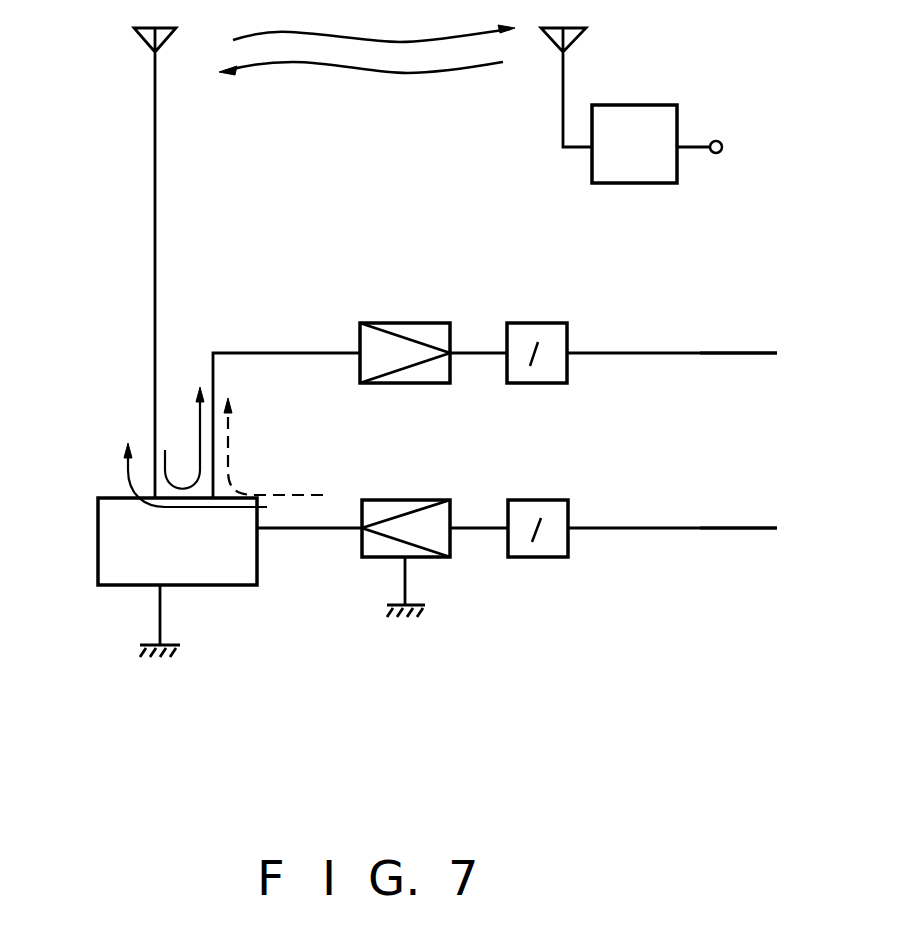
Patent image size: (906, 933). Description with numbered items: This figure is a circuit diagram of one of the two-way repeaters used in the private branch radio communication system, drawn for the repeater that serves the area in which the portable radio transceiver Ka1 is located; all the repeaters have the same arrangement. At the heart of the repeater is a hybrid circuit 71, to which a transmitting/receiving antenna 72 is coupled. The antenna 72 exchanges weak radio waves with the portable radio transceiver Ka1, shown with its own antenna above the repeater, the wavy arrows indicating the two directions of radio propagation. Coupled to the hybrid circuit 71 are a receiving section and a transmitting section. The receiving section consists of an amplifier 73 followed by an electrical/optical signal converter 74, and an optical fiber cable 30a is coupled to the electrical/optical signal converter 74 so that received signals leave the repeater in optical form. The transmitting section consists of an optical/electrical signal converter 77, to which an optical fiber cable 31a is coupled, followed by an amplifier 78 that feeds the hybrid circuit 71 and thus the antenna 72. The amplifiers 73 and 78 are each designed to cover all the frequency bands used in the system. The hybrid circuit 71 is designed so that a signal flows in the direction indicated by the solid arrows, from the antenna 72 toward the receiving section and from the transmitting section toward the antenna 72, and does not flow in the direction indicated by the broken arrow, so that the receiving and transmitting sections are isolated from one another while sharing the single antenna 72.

The hybrid circuit 71 is at (98, 550).
The transmitting/receiving antenna 72 is at (140, 34).
The amplifier 73 is at (422, 323).
The electrical/optical signal converter 74 is at (540, 323).
The optical/electrical signal converter 77 is at (548, 500).
The amplifier 78 is at (425, 500).
The optical fiber cable 30a is at (733, 351).
The optical fiber cable 31a is at (708, 528).
The portable radio transceiver Ka1 is at (656, 184).